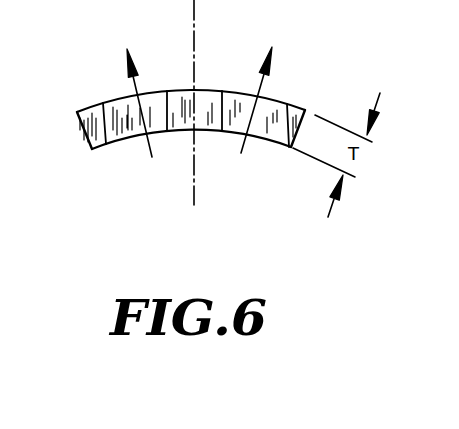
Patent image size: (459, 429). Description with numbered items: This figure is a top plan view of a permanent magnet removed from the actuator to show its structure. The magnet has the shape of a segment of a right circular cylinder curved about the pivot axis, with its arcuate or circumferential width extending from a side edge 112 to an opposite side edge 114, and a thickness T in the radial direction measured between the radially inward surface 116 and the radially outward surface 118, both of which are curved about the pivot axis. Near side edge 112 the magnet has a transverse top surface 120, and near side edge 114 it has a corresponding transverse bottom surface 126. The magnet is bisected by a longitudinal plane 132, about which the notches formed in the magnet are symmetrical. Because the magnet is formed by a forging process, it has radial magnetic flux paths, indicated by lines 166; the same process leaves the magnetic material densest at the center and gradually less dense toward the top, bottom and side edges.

The side edge 112 is at (84, 137).
The opposite side edge 114 is at (300, 128).
The radially inward surface 116 is at (112, 148).
The radially outward surface 118 is at (180, 89).
The transverse top surface 120 is at (93, 108).
The transverse bottom surface 126 is at (292, 140).
The longitudinal plane 132 is at (195, 21).
The lines indicating radial magnetic flux paths 166 is at (152, 156).